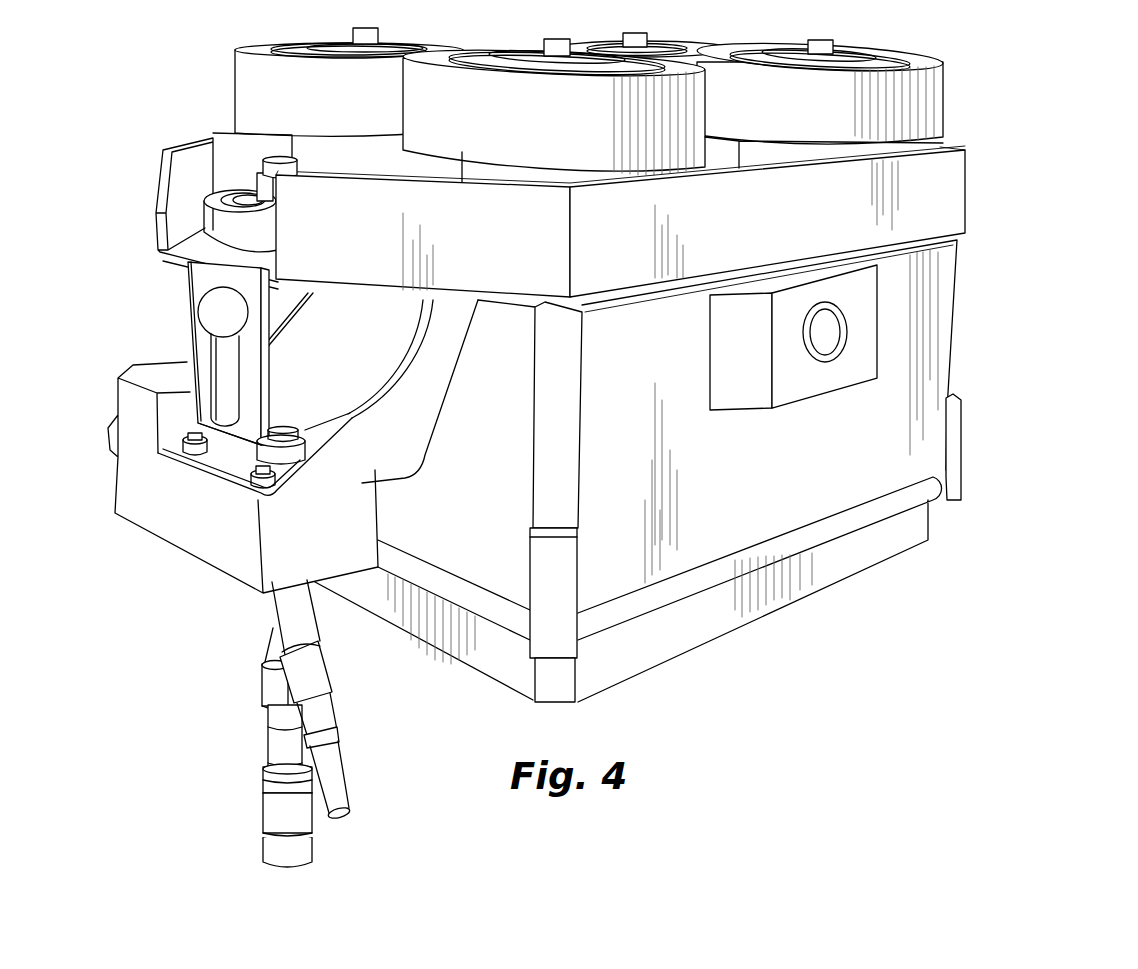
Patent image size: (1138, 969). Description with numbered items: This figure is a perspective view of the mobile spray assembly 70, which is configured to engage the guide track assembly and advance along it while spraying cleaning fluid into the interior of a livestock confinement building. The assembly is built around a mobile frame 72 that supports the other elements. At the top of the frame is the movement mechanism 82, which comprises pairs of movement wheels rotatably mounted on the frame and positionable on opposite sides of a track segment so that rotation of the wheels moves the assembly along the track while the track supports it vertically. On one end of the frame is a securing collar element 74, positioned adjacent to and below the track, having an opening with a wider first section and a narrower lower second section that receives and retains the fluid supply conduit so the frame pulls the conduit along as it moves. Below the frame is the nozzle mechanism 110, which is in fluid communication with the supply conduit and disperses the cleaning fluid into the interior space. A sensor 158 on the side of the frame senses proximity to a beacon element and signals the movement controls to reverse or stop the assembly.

The mobile spray assembly 70 is at (602, 447).
The mobile frame 72 is at (952, 192).
The securing collar element 74 is at (195, 305).
The movement mechanism 82 is at (200, 72).
The nozzle mechanism 110 is at (190, 577).
The sensor 158 is at (835, 330).